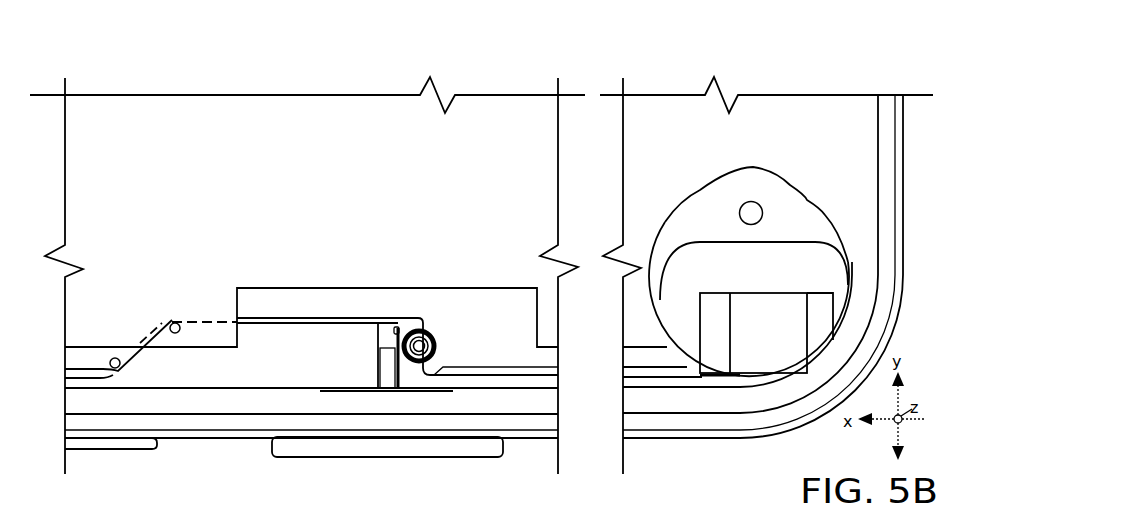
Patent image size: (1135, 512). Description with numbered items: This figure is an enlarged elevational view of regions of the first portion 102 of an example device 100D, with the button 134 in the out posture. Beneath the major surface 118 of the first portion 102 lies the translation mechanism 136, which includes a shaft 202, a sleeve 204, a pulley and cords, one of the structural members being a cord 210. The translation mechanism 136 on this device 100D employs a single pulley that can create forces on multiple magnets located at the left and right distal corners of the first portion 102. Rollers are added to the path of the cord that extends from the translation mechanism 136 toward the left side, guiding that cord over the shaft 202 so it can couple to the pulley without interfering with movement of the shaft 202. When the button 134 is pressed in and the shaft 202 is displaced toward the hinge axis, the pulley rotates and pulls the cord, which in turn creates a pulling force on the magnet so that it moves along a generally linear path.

The device 100D is at (282, 62).
The major surface 118 is at (393, 140).
The translation mechanism 136 is at (309, 270).
The sleeve 204 is at (381, 325).
The cord 210 is at (412, 317).
The shaft 202 is at (388, 380).
The button 134 is at (350, 458).
The first portion 102 is at (878, 88).